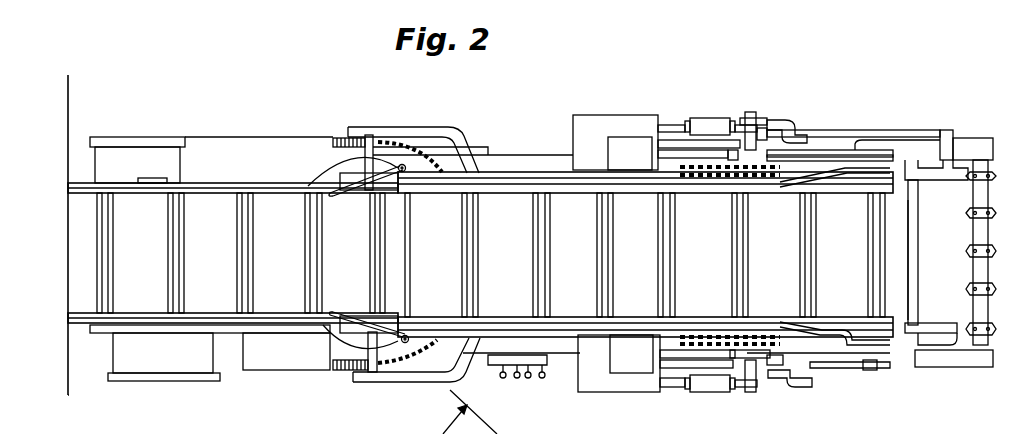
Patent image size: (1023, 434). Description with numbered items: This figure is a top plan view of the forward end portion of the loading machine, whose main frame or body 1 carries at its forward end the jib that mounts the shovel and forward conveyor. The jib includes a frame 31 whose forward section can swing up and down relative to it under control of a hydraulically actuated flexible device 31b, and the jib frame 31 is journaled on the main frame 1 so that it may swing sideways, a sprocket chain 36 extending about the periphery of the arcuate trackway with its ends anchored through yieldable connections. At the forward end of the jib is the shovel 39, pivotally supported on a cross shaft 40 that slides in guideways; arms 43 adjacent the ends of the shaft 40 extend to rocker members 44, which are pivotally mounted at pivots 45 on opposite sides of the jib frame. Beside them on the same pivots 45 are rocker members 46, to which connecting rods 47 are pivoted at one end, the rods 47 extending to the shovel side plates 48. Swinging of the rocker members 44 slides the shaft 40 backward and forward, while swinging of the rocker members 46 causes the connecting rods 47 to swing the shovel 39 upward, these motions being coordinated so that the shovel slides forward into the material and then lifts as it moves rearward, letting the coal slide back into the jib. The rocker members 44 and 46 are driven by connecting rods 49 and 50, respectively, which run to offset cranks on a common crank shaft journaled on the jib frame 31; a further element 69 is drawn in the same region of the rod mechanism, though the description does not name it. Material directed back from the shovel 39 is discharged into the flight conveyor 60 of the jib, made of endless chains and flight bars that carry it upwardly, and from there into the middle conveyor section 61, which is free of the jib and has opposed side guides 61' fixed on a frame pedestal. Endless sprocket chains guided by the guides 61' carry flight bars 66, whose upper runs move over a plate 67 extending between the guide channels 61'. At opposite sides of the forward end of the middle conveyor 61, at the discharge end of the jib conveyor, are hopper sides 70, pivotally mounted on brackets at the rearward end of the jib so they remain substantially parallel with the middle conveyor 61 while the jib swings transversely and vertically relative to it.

The main frame 1 is at (314, 146).
The jib frame 31 is at (550, 155).
The hydraulically actuated flexible device 31b is at (778, 174).
The sprocket chain 36 is at (422, 152).
The shovel 39 is at (927, 208).
The cross shaft 40 is at (912, 248).
The arms 43 is at (810, 158).
The rocker members 44 is at (760, 380).
The pivots 45 is at (772, 123).
The rocker members 46 is at (753, 117).
The connecting rods 47 is at (882, 130).
The shovel side plates 48 is at (960, 155).
The connecting rod 49 is at (715, 365).
The connecting rod 50 is at (670, 125).
The flight conveyor 60 is at (806, 262).
The middle conveyor section 61 is at (233, 169).
The side guides 61' is at (233, 261).
The flight bars 66 is at (240, 217).
The plate 67 is at (203, 303).
The cylinder 69 is at (703, 143).
The hopper sides 70 is at (340, 342).